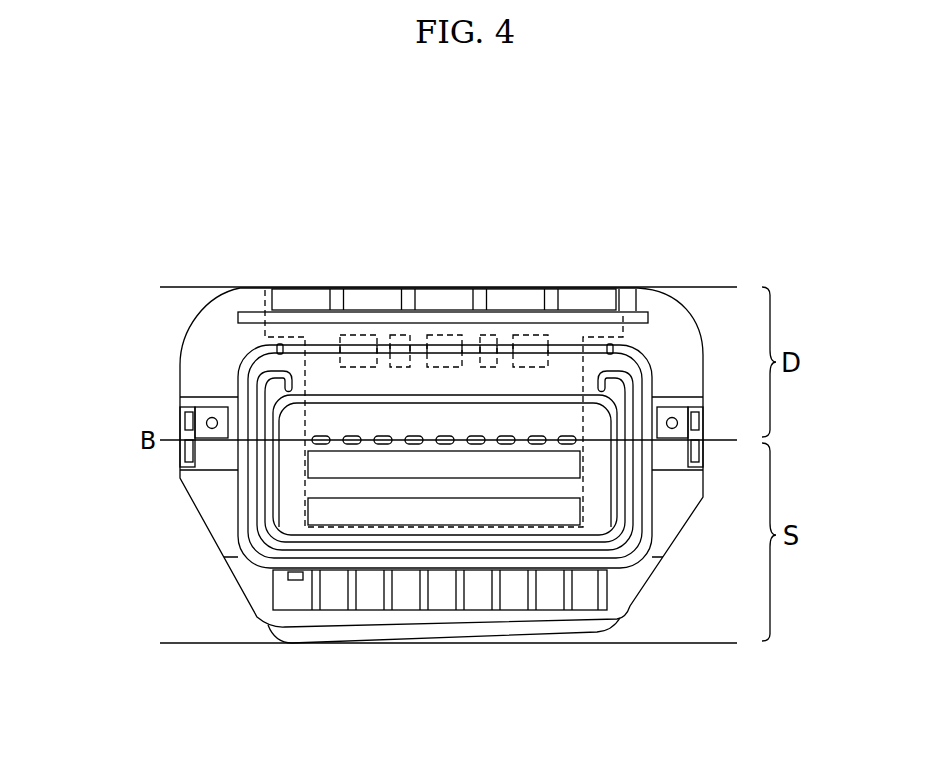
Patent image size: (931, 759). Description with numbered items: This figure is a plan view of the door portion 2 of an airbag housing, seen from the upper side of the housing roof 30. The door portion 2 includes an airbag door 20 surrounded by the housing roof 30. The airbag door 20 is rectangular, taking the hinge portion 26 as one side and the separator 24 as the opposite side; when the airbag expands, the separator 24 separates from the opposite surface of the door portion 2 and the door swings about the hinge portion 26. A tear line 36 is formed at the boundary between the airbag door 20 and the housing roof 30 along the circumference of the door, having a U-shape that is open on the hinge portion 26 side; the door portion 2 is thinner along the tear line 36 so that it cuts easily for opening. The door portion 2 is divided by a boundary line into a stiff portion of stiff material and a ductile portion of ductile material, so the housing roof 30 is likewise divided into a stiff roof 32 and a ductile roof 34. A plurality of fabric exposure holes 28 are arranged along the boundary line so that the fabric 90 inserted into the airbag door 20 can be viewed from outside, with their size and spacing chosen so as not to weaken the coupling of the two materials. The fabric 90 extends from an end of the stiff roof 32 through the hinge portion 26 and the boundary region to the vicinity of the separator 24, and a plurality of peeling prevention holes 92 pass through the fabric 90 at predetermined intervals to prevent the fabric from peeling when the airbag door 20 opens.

The door portion 2 is at (308, 266).
The airbag door 20 is at (597, 478).
The separator 24 is at (578, 546).
The hinge portion 26 is at (641, 318).
The fabric exposure hole 28 is at (503, 444).
The housing roof 30 is at (66, 597).
The stiff roof 32 is at (270, 586).
The ductile roof 34 is at (230, 333).
The tear line 36 is at (543, 549).
The fabric 90 is at (343, 487).
The peeling prevention hole 92 is at (450, 336).